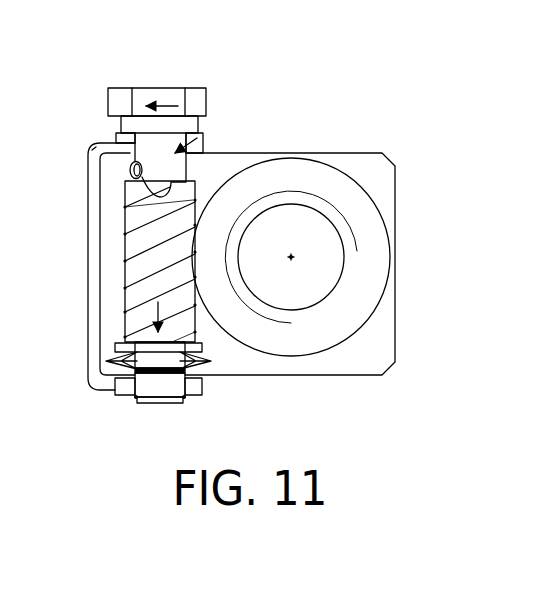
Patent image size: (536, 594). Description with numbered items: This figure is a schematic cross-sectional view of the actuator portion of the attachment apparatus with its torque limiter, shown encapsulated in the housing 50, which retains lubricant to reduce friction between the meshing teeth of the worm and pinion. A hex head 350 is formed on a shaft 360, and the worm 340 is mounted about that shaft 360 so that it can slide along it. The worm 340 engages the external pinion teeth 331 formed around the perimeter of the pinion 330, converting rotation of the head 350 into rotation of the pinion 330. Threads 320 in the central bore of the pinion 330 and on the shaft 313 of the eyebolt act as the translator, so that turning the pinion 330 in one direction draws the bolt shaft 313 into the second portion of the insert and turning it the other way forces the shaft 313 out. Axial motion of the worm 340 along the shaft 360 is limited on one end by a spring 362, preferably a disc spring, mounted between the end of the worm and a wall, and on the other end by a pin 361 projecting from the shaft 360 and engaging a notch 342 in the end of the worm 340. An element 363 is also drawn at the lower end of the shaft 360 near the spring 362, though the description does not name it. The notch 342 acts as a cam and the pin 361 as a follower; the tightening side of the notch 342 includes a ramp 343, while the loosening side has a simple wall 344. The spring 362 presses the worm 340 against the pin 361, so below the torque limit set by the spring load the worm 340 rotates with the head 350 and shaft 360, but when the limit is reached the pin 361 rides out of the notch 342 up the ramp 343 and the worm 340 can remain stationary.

The housing 50 is at (91, 237).
The shaft of the eyebolt 313 is at (302, 282).
The threads 320 is at (317, 217).
The pinion 330 is at (347, 322).
The pinion teeth 331 is at (283, 161).
The worm 340 is at (138, 292).
The notch 342 is at (200, 134).
The ramp 343 is at (132, 177).
The wall 344 is at (193, 183).
The hex head 350 is at (170, 87).
The shaft 360 is at (157, 143).
The pin 361 is at (96, 152).
The spring 362 is at (207, 363).
The nut 363 is at (131, 394).